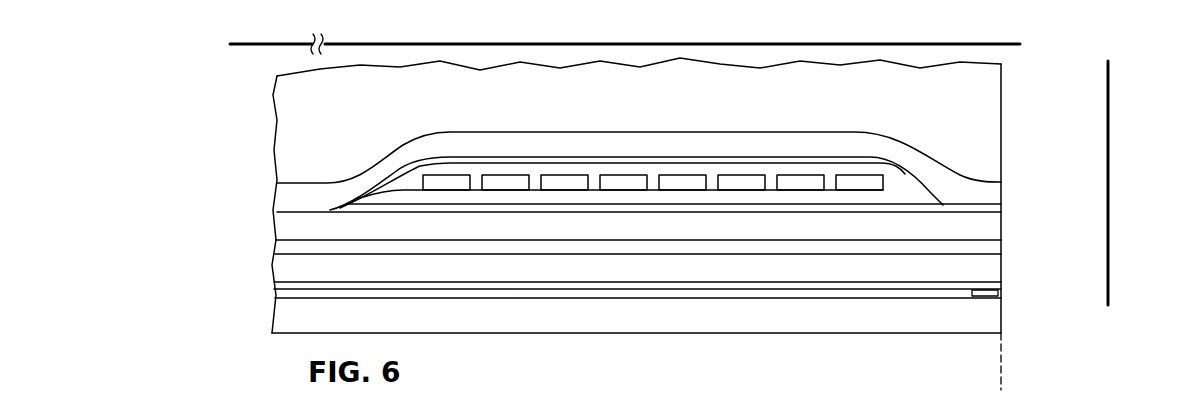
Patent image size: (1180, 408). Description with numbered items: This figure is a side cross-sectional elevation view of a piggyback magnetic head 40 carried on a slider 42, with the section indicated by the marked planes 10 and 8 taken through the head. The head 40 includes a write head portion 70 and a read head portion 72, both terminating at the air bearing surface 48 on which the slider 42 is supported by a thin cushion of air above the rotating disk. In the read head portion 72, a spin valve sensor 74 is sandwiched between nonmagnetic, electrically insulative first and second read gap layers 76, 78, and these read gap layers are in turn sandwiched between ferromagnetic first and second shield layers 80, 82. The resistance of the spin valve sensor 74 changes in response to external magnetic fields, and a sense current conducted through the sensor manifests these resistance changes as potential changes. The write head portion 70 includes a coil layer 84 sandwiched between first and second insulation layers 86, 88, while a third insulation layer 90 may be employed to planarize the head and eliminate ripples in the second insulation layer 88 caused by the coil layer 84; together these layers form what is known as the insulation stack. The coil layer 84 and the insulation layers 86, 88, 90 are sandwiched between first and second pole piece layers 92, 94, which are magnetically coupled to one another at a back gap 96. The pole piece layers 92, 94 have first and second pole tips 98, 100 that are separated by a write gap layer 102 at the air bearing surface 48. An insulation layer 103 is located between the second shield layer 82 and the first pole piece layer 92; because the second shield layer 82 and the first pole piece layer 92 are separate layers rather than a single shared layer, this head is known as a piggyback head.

The section line 8- 8 is at (1158, 297).
The section line 10- 10 is at (1022, 44).
The piggyback magnetic head 40 is at (254, 82).
The slider 42 is at (987, 90).
The air bearing surface 48 is at (1001, 386).
The write head portion 70 is at (582, 227).
The read head portion 72 is at (577, 317).
The spin valve sensor 74 is at (998, 293).
The first read gap layer 76 is at (695, 300).
The second read gap layer 78 is at (668, 282).
The first shield layer 80 is at (788, 318).
The second shield layer 82 is at (883, 272).
The coil layer 84 is at (680, 180).
The first insulation layer 86 is at (602, 200).
The second insulation layer 88 is at (898, 182).
The third insulation layer 90 is at (479, 158).
The first pole piece layer 92 is at (927, 232).
The second pole piece layer 94 is at (804, 143).
The back gap 96 is at (312, 210).
The first pole tip 98 is at (1001, 232).
The second pole tip 100 is at (1001, 190).
The write gap layer 102 is at (1001, 211).
The insulation layer 103 is at (842, 248).